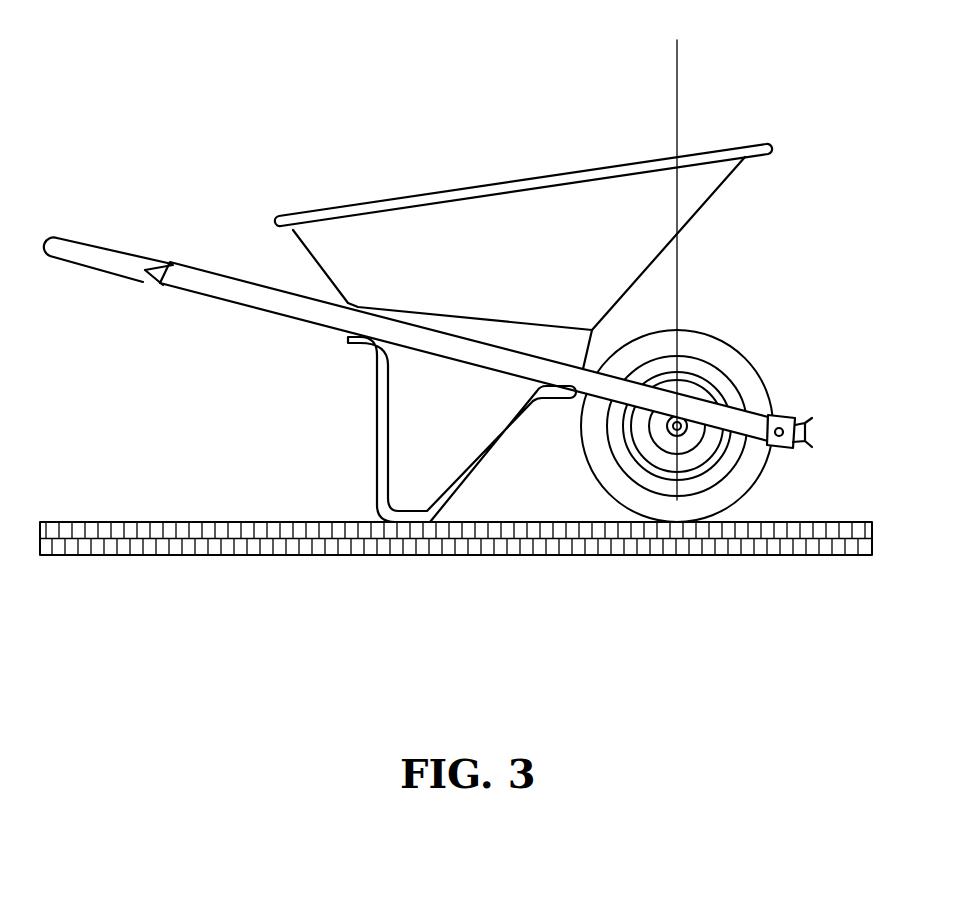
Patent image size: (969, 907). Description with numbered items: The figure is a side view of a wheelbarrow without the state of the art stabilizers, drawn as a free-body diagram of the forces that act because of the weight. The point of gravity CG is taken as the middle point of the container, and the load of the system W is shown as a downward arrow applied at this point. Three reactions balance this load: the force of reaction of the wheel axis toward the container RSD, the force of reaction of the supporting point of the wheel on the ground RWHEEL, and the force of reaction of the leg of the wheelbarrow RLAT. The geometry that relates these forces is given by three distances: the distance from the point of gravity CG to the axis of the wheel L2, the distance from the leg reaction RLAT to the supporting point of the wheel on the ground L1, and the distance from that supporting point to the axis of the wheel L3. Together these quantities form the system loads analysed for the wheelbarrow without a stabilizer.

The load of system W is at (501, 132).
The point of gravity CG is at (511, 244).
The distance from leg reaction to wheel supporting point L1 is at (688, 599).
The distance from CG to wheel axis L2 is at (683, 62).
The distance from wheel supporting point to wheel axis L3 is at (682, 484).
The force of reaction of the wheel axis RSD is at (692, 225).
The force of reaction of the leg RLAT is at (389, 567).
The force of reaction of the wheel supporting point RWHEEL is at (718, 590).